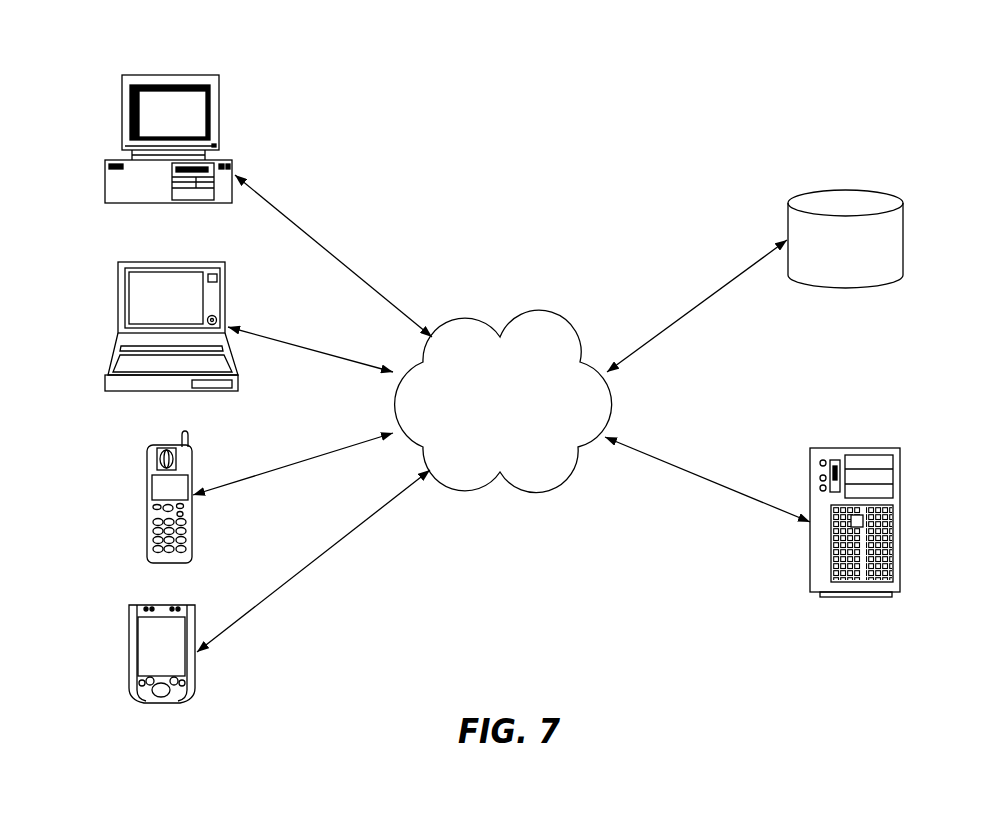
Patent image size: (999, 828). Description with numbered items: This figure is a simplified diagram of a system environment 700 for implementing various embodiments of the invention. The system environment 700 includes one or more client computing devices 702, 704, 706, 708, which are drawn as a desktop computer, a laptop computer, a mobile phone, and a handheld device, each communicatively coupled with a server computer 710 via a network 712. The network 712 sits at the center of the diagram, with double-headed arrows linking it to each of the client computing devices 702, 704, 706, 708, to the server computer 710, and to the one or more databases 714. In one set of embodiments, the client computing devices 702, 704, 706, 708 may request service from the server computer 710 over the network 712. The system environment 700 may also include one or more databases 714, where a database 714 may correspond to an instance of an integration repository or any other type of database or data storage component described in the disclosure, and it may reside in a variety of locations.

The system environment 700 is at (946, 110).
The client computing device 702 is at (168, 75).
The client computing device 704 is at (168, 262).
The client computing device 706 is at (166, 447).
The client computing device 708 is at (163, 605).
The server computer 710 is at (853, 448).
The network 712 is at (503, 401).
The database 714 is at (880, 193).